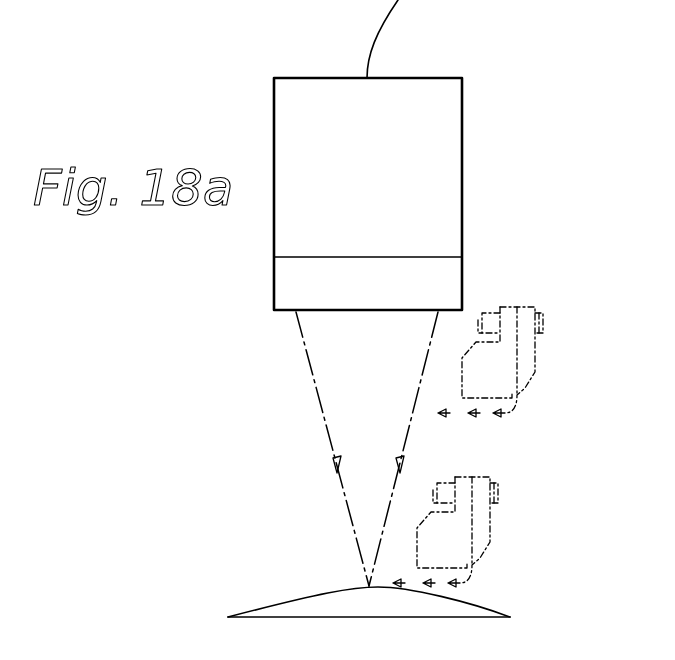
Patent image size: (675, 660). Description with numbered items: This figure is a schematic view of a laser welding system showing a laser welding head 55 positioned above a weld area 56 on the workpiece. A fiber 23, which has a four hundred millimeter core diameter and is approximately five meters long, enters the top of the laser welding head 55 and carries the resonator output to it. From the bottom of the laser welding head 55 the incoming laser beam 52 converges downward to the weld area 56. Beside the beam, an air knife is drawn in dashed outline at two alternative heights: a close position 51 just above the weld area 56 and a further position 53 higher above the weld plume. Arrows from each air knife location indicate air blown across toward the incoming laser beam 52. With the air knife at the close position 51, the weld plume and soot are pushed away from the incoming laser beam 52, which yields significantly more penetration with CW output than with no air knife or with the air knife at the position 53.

The fiber 23 is at (370, 35).
The laser welding head 55 is at (462, 177).
The incoming laser beam 52 is at (329, 437).
The air knife position 53 is at (535, 362).
The air knife close position 51 is at (490, 532).
The weld area 56 is at (368, 585).